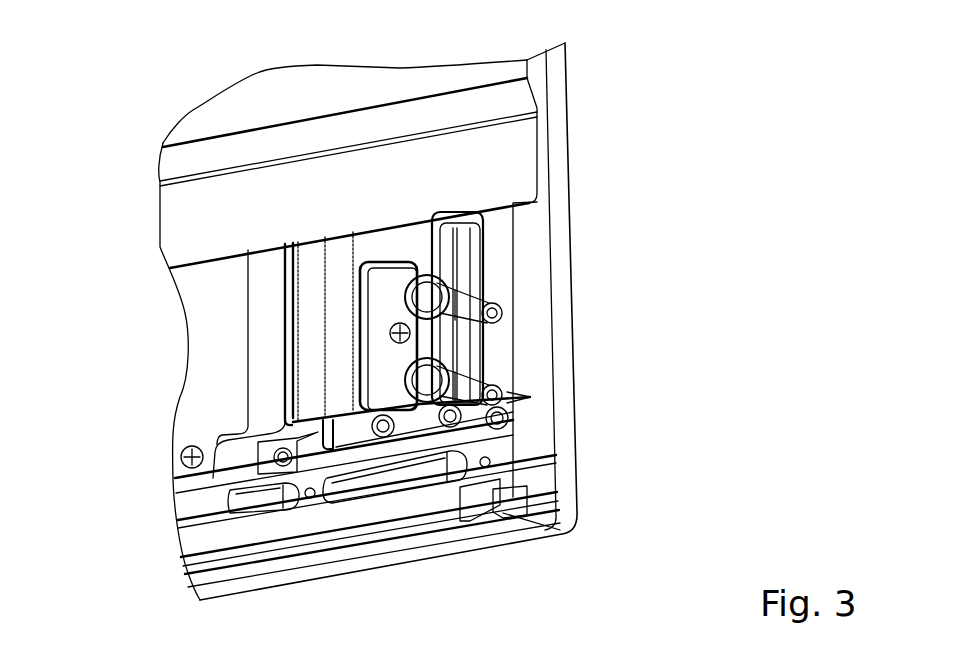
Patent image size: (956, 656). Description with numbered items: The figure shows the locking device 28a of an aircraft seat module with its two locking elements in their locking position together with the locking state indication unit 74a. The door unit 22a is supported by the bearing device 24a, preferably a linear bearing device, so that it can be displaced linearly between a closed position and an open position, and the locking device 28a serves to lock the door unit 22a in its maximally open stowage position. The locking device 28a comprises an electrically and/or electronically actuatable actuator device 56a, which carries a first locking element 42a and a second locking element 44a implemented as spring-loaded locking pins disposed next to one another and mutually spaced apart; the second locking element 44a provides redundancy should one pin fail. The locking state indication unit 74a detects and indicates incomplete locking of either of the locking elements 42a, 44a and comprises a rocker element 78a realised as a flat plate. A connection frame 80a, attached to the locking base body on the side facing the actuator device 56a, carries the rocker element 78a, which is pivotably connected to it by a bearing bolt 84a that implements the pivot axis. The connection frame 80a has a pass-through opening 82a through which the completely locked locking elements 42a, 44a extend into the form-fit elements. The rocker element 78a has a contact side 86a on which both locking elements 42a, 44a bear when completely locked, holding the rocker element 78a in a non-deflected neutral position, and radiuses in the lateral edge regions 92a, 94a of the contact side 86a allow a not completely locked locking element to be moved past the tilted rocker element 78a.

The door unit 22a is at (283, 105).
The bearing device 24a is at (174, 558).
The locking device 28a is at (523, 352).
The first locking element 42a is at (490, 297).
The second locking element 44a is at (487, 357).
The actuator device 56a is at (427, 206).
The locking state indication unit 74a is at (352, 219).
The rocker element 78a is at (390, 312).
The connection frame 80a is at (492, 261).
The pass-through opening 82a is at (467, 238).
The bearing bolt 84a is at (392, 340).
The contact side 86a is at (462, 350).
The lateral edge region 92a is at (358, 291).
The lateral edge region 94a is at (360, 382).